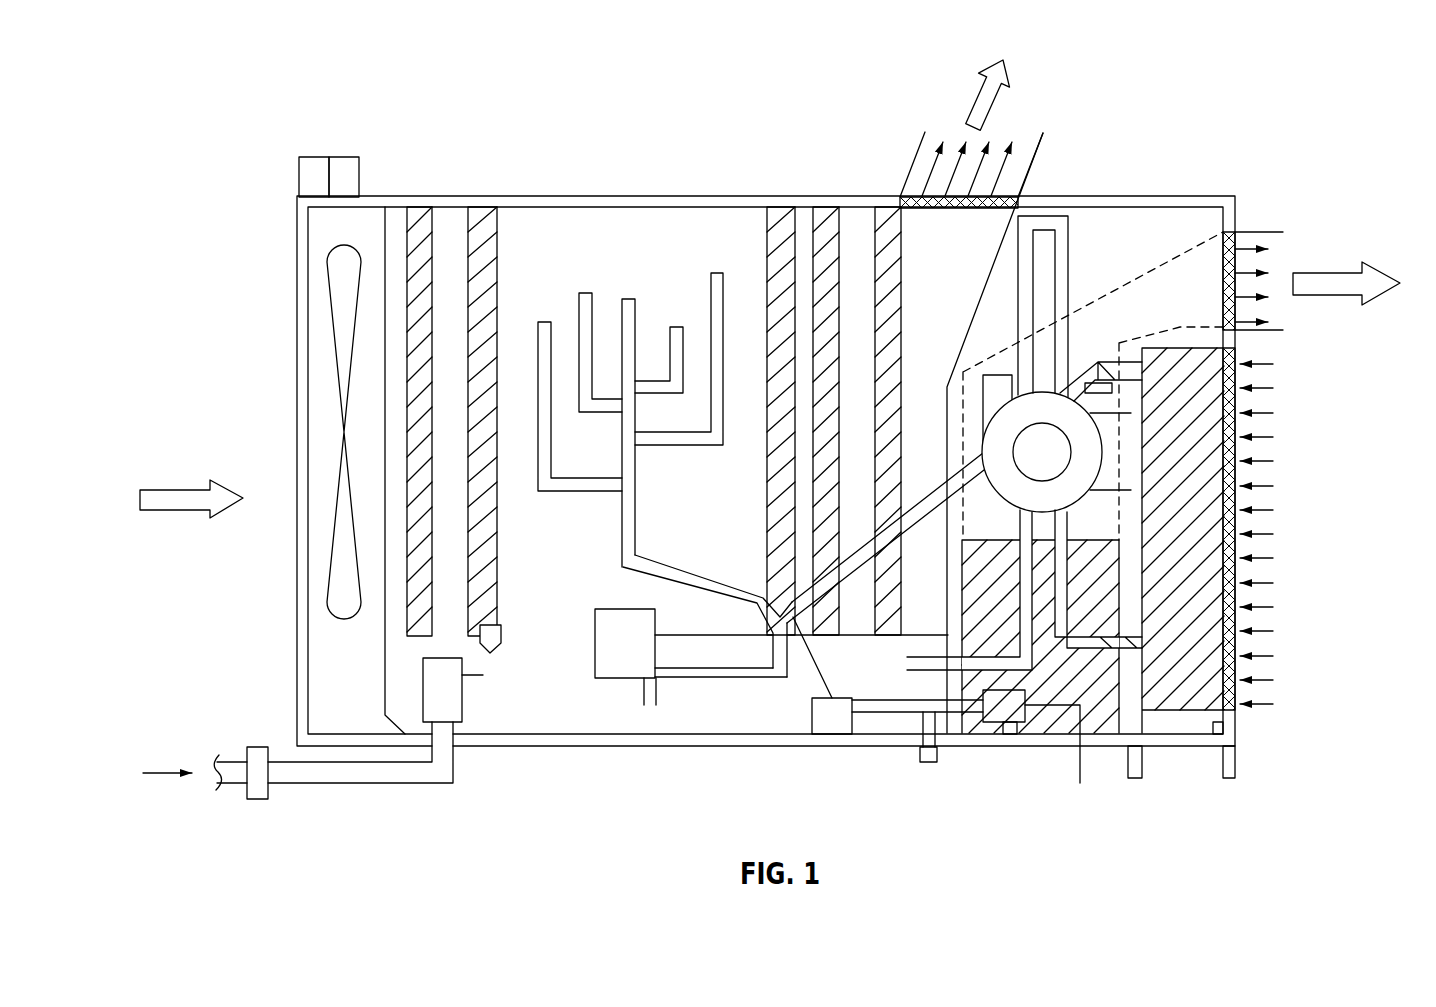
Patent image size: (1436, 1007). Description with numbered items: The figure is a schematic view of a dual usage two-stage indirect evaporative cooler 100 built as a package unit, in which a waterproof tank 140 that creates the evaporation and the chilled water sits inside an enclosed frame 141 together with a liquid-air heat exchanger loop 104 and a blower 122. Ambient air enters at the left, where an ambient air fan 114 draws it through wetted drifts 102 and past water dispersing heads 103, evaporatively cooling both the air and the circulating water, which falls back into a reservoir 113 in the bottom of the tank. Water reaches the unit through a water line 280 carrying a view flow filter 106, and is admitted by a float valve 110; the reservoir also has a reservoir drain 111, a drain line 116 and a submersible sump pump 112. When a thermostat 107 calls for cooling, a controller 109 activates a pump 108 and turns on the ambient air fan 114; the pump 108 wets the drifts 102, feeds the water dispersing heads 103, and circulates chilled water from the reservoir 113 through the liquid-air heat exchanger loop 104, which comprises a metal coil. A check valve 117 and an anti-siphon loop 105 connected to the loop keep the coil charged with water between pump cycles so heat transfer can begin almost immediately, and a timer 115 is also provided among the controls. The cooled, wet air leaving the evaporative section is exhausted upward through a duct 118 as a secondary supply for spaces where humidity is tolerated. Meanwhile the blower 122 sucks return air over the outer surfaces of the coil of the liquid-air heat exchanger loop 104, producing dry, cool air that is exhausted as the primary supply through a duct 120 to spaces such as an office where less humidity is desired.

The dual usage two-stage indirect evaporative cooler 100 is at (198, 110).
The drifts 102 is at (482, 207).
The water dispersing heads 103 is at (585, 293).
The liquid-air heat exchanger loop 104 is at (1070, 233).
The anti-siphon loop 105 is at (1050, 216).
The view flow filter 106 is at (258, 747).
The thermostat 107 is at (312, 157).
The pump 108 is at (612, 680).
The controller 109 is at (345, 157).
The float valve 110 is at (442, 723).
The reservoir drain 111 is at (937, 752).
The submersible sump pump 112 is at (822, 733).
The reservoir 113 is at (567, 690).
The ambient air fan 114 is at (332, 308).
The timer 115 is at (1018, 732).
The drain line 116 is at (877, 713).
The check valve 117 is at (795, 620).
The duct 118 is at (920, 142).
The duct 120 is at (1267, 332).
The blower 122 is at (995, 435).
The waterproof tank 140 is at (545, 539).
The enclosed frame 141 is at (297, 677).
The water line 280 is at (232, 787).